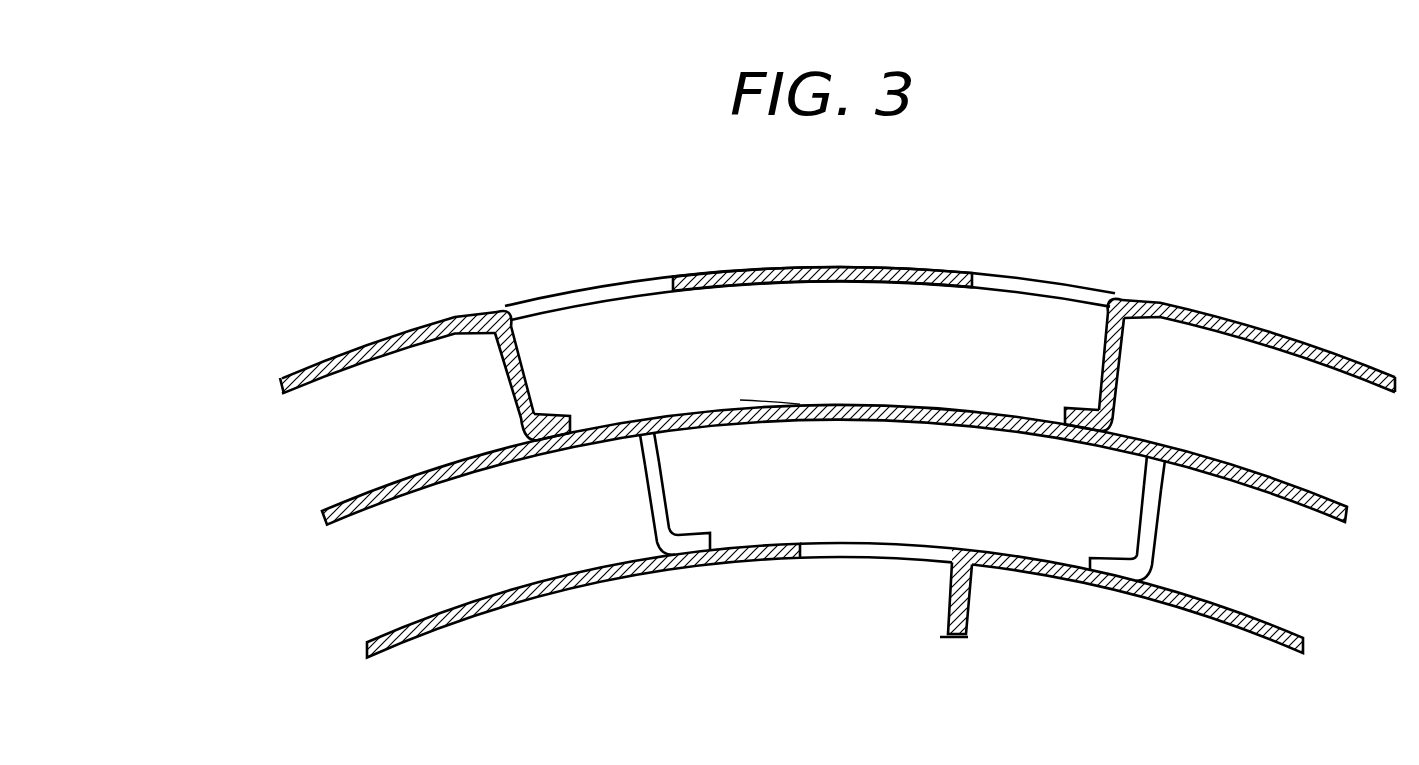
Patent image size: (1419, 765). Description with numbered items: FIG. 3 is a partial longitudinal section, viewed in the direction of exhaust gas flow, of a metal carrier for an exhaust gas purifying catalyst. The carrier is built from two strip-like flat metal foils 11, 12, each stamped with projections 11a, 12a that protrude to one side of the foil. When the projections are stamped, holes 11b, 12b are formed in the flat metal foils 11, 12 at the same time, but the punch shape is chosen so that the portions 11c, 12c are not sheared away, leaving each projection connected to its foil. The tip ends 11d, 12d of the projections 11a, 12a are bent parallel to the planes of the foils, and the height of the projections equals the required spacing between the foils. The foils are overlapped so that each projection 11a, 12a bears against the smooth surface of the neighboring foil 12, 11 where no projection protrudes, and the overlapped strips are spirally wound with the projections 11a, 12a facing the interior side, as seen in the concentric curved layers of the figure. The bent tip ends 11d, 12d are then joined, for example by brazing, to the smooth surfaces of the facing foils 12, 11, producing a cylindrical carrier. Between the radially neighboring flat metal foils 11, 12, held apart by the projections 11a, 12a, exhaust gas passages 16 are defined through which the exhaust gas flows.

The flat metal foil 11 is at (285, 386).
The projection 11a is at (525, 375).
The hole 11b is at (666, 286).
The portion 11c is at (494, 334).
The tip end 11d is at (546, 441).
The flat metal foil 12 is at (478, 456).
The projection 12a is at (668, 496).
The hole 12b is at (767, 404).
The portion 12c is at (642, 446).
The tip end 12d is at (684, 560).
The exhaust gas passage 16 is at (870, 470).